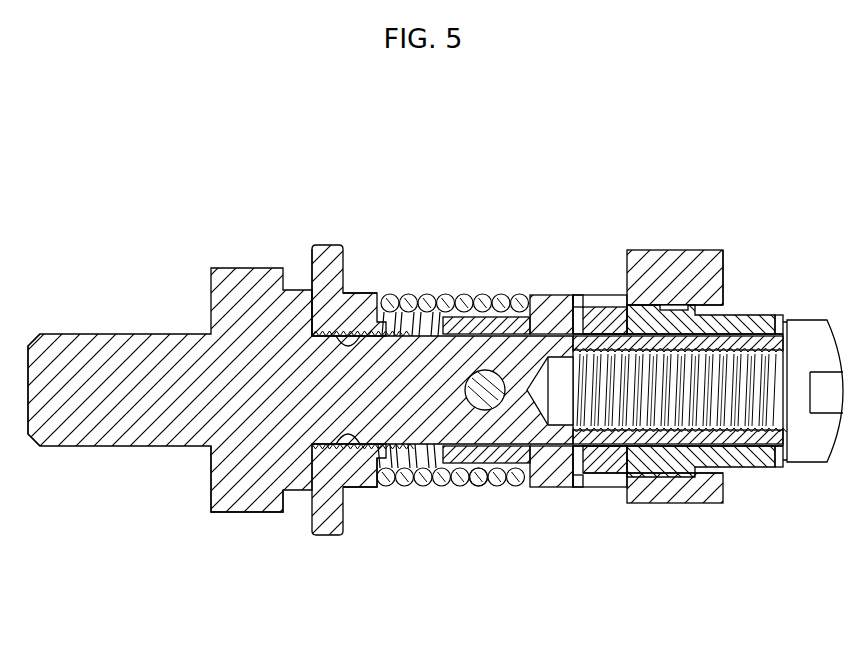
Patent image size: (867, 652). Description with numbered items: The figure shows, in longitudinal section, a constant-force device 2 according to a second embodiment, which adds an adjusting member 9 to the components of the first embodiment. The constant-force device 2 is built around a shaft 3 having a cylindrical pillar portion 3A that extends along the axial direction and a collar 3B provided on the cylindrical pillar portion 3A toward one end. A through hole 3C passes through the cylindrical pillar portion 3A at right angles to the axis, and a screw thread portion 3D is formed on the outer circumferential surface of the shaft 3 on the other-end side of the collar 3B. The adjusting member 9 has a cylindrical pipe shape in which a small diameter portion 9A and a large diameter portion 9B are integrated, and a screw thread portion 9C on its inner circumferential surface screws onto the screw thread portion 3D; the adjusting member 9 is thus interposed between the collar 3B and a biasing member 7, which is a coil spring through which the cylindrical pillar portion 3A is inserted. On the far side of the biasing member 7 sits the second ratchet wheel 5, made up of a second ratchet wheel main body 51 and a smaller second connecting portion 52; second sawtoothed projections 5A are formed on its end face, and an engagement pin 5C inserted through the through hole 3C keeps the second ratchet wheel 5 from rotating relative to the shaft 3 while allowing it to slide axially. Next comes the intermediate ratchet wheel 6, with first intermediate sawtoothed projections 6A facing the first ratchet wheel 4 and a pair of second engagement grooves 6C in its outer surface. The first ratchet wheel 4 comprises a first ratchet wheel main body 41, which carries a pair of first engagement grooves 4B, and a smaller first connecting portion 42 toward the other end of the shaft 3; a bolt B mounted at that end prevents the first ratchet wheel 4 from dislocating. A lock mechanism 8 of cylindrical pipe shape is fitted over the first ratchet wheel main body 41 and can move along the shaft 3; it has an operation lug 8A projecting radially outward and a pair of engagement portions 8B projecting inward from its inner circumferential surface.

The constant-force device 2 is at (162, 198).
The shaft 3 is at (80, 500).
The cylindrical pillar portion 3A is at (93, 447).
The collar 3B is at (215, 462).
The through hole 3C is at (478, 412).
The screw thread portion 3D is at (353, 488).
The first ratchet wheel 4 is at (740, 563).
The first engagement grooves 4B is at (675, 312).
The first ratchet wheel main body 41 is at (690, 478).
The first connecting portion 42 is at (722, 470).
The second ratchet wheel 5 is at (555, 253).
The second sawtoothed projections 5A is at (573, 293).
The engagement pin 5C is at (490, 412).
The second ratchet wheel main body 51 is at (552, 295).
The second connecting portion 52 is at (483, 317).
The intermediate ratchet wheel 6 is at (603, 307).
The first intermediate sawtoothed projections 6A is at (610, 478).
The second engagement grooves 6C is at (578, 300).
The biasing member 7 is at (426, 295).
The lock mechanism 8 is at (650, 250).
The operation lug 8A is at (713, 250).
The engagement portions 8B is at (728, 312).
The adjusting member 9 is at (292, 187).
The small diameter portion 9A is at (358, 293).
The large diameter portion 9B is at (322, 245).
The screw thread portion 9C is at (352, 345).
The bolt B is at (825, 320).